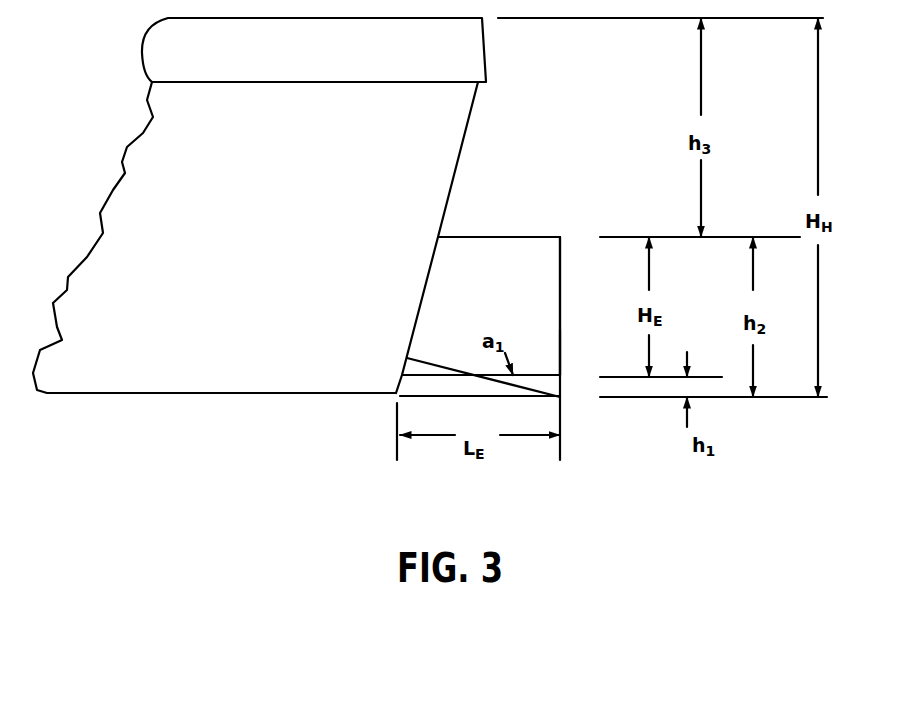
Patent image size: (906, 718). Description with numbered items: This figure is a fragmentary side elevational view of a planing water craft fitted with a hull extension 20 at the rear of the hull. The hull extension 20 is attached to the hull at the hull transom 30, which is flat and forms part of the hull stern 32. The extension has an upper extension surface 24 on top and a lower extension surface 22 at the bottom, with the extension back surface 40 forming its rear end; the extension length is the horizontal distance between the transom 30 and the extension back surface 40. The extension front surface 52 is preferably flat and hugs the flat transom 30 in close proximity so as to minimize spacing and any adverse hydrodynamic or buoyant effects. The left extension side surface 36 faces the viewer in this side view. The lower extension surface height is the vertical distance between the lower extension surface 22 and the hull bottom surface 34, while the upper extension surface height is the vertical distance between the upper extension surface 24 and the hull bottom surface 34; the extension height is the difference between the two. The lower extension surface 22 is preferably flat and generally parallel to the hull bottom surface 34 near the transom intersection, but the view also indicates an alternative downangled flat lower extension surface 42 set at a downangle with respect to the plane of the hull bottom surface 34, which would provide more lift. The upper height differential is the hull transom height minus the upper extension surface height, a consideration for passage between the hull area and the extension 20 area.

The hull extension 20 is at (543, 348).
The lower extension surface 22 is at (550, 380).
The upper extension surface 24 is at (483, 237).
The hull transom 30 is at (447, 163).
The hull stern 32 is at (478, 108).
The hull bottom surface 34 is at (143, 388).
The left extension side surface 36 is at (543, 240).
The extension back surface 40 is at (562, 302).
The downangled flat lower extension surface 42 is at (509, 388).
The extension front surface 52 is at (422, 293).